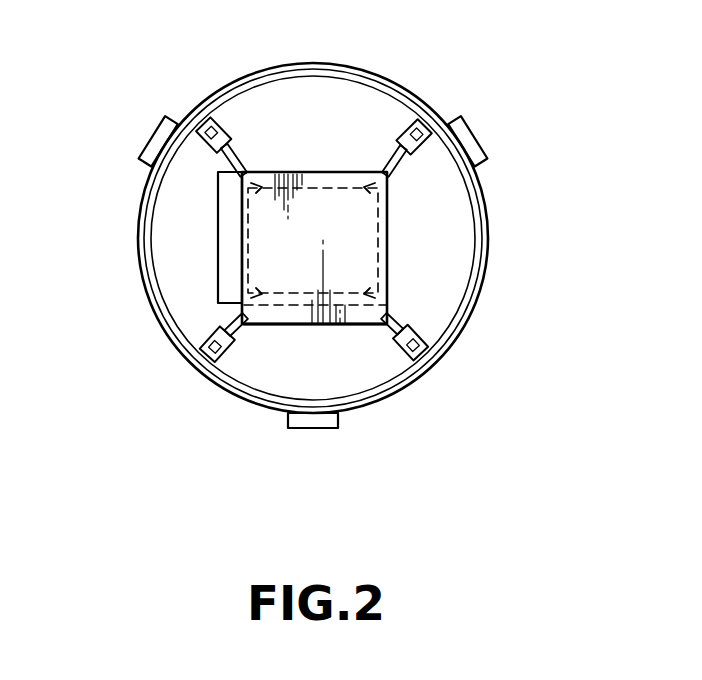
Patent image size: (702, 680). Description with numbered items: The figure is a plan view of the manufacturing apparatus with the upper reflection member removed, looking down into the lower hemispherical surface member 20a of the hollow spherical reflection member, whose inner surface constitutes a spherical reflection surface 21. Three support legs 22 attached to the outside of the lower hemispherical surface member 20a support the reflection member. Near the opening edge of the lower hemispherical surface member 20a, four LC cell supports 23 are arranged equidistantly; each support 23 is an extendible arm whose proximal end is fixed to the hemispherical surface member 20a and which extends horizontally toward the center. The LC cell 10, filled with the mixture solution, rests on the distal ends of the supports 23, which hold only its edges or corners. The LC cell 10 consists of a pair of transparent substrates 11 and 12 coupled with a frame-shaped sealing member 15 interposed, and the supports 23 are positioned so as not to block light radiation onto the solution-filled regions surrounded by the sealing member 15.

The LC cell 10 is at (318, 164).
The transparent substrate 11 is at (288, 318).
The transparent substrate 12 is at (218, 213).
The sealing member 15 is at (383, 232).
The lower hemispherical surface member 20a is at (488, 270).
The spherical reflection surface 21 is at (407, 387).
The support legs 22 is at (150, 145).
The LC cell supports 23 is at (230, 147).